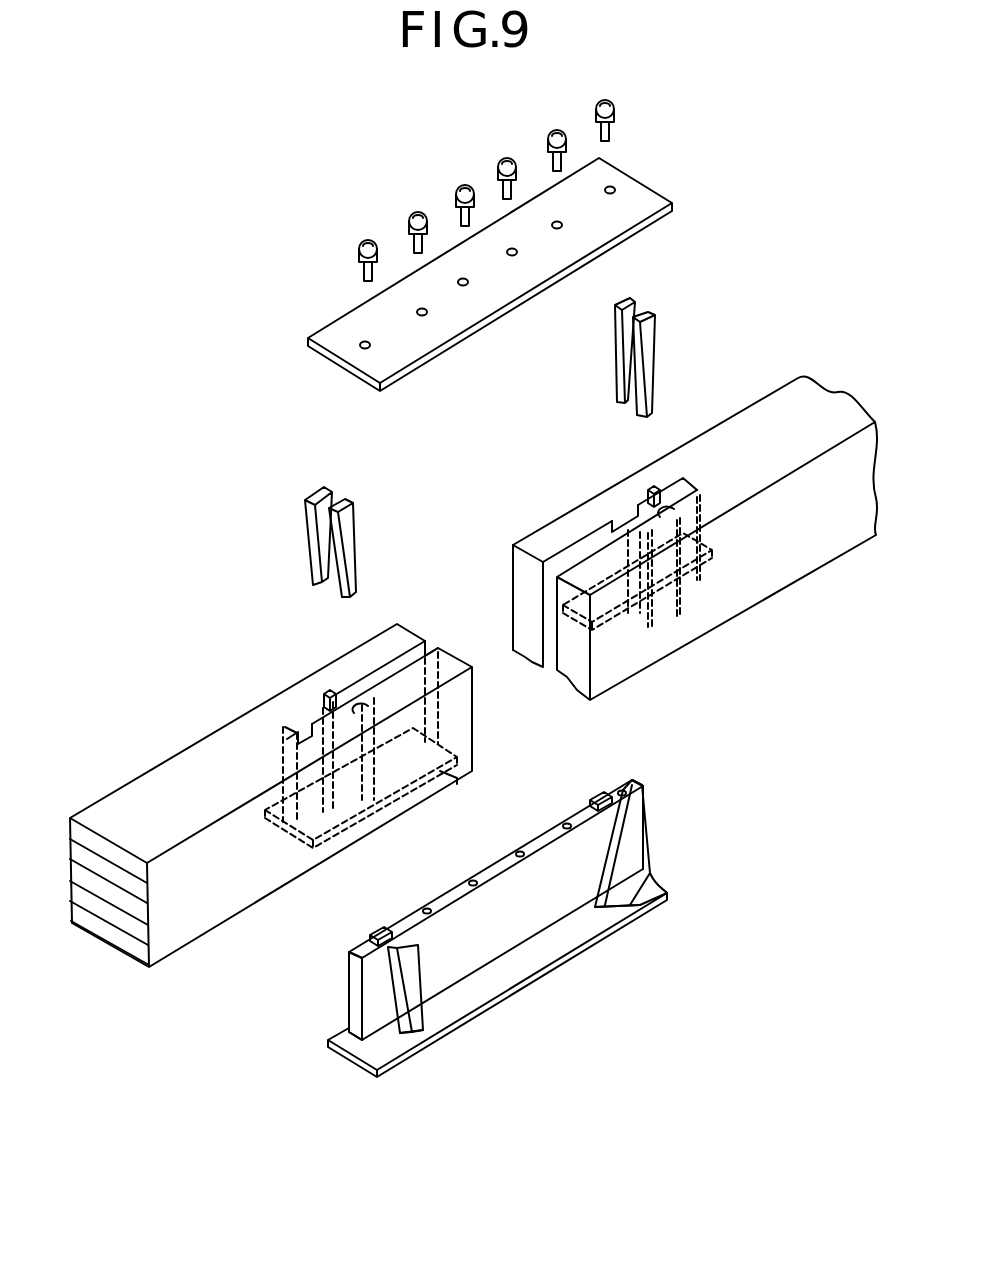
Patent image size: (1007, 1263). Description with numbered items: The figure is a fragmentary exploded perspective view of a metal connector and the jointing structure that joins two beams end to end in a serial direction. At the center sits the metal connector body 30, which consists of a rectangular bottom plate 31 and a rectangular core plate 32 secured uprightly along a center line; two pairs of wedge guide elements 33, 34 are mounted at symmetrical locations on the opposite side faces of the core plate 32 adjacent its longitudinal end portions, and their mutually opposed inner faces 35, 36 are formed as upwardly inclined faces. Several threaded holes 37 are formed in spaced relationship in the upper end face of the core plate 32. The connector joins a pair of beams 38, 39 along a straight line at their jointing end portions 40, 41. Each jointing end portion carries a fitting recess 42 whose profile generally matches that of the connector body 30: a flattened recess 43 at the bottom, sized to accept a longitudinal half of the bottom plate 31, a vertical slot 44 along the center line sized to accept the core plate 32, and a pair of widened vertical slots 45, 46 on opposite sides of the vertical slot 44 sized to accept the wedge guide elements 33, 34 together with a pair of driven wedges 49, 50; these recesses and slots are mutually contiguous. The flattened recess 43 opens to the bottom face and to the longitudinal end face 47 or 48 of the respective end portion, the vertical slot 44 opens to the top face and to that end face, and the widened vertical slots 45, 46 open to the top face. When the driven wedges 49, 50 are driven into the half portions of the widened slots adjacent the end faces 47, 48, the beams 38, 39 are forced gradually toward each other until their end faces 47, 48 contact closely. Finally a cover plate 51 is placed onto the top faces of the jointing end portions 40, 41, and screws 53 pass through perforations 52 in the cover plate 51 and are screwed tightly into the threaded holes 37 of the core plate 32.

The metal connector body 30 is at (490, 920).
The rectangular bottom plate 31 is at (487, 1008).
The rectangular core plate 32 is at (543, 910).
The wedge guide element 33 is at (630, 782).
The wedge guide element 34 is at (615, 837).
The inner face 35 is at (592, 803).
The inner face 36 is at (660, 898).
The threaded hole 37 is at (518, 857).
The beam 38 is at (441, 680).
The beam 39 is at (652, 508).
The jointing end portion 40 is at (212, 750).
The jointing end portion 41 is at (728, 425).
The fitting recess 42 is at (298, 702).
The flattened recess 43 is at (438, 776).
The vertical slot 44 is at (368, 684).
The widened vertical slot 45 is at (332, 690).
The widened vertical slot 46 is at (360, 715).
The longitudinal end face 47 is at (512, 600).
The longitudinal end face 48 is at (527, 590).
The driven wedge 49 is at (315, 548).
The driven wedge 50 is at (333, 538).
The cover plate 51 is at (356, 322).
The perforation 52 is at (466, 286).
The screw 53 is at (457, 190).